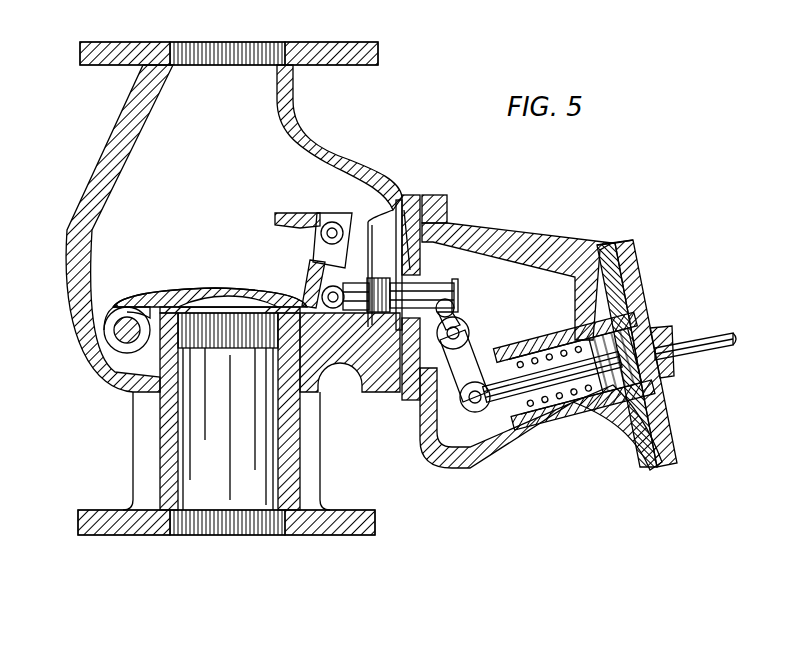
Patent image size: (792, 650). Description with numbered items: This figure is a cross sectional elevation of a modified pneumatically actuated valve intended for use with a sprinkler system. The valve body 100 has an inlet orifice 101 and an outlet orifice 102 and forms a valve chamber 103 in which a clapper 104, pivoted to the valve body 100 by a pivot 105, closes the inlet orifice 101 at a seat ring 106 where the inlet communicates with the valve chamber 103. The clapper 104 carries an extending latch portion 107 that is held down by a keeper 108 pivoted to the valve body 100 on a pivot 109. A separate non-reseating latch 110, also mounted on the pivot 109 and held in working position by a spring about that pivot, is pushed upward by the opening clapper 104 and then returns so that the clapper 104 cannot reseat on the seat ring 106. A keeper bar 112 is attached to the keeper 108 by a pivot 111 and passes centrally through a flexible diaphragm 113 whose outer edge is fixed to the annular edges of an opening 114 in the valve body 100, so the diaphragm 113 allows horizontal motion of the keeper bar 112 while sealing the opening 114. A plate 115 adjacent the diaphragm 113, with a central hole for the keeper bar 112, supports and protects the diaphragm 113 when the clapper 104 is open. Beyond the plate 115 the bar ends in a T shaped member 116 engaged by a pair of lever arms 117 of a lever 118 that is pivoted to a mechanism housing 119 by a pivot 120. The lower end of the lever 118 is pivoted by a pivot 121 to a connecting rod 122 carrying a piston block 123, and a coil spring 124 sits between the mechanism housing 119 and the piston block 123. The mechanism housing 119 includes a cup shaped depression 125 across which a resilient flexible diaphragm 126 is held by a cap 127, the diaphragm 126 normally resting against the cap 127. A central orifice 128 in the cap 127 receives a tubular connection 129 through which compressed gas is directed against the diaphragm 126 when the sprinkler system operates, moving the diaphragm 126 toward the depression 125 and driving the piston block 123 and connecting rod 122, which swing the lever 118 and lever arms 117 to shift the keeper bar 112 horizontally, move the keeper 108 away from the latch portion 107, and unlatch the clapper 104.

The valve body 100 is at (67, 258).
The inlet orifice 101 is at (243, 533).
The outlet orifice 102 is at (236, 52).
The valve chamber 103 is at (192, 196).
The clapper 104 is at (176, 290).
The pivot 105 is at (124, 318).
The seat ring 106 is at (216, 340).
The latch portion 107 is at (300, 300).
The keeper 108 is at (322, 284).
The pivot 109 is at (336, 230).
The non-reseating latch 110 is at (288, 212).
The pivot 111 is at (336, 304).
The keeper bar 112 is at (380, 313).
The flexible diaphragm 113 is at (398, 265).
The opening 114 is at (410, 197).
The plate 115 is at (421, 262).
The T shaped member 116 is at (458, 294).
The lever arms 117 is at (455, 316).
The lever 118 is at (467, 360).
The mechanism housing 119 is at (538, 243).
The pivot 120 is at (460, 337).
The pivot 121 is at (474, 404).
The connecting rod 122 is at (518, 380).
The piston block 123 is at (615, 360).
The coil spring 124 is at (561, 398).
The cup shaped depression 125 is at (612, 316).
The flexible diaphragm 126 is at (632, 283).
The cap 127 is at (664, 402).
The orifice 128 is at (662, 343).
The tubular connection 129 is at (727, 339).